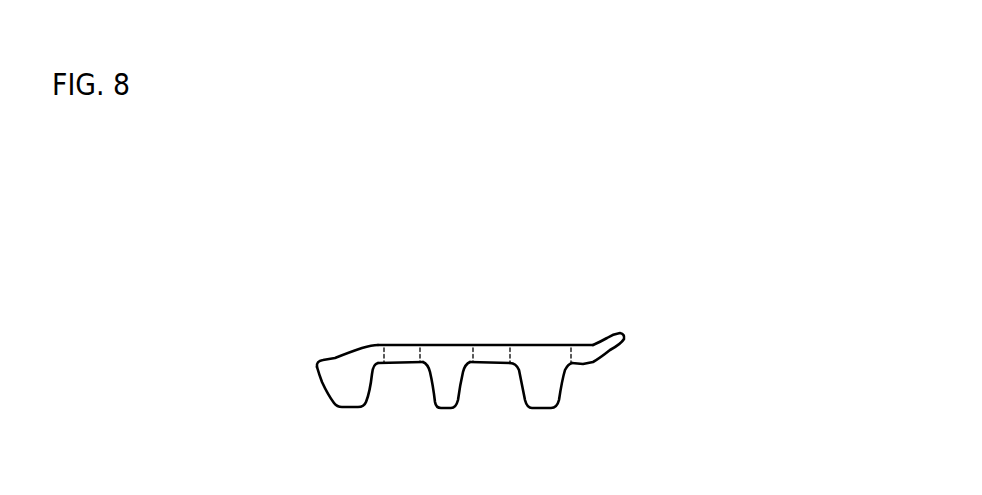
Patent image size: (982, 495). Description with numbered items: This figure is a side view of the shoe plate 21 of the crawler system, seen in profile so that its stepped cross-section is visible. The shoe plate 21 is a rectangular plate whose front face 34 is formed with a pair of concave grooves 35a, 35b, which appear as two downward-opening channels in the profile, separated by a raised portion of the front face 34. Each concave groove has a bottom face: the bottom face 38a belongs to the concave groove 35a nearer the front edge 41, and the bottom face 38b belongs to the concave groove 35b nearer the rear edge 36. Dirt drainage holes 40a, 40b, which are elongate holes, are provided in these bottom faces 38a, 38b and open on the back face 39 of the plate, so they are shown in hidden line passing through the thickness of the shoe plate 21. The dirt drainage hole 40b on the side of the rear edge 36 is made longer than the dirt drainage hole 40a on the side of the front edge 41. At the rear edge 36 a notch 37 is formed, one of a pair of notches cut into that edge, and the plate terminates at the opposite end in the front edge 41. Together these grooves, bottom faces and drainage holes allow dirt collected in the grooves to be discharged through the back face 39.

The shoe plate 21 is at (547, 330).
The front face 34 is at (447, 409).
The concave groove 35a is at (433, 388).
The concave groove 35b is at (521, 390).
The rear edge 36 is at (626, 337).
The notch 37 is at (587, 368).
The bottom face 38a is at (393, 364).
The bottom face 38b is at (499, 364).
The back face 39 is at (443, 345).
The dirt drainage hole 40a is at (395, 345).
The dirt drainage hole 40b is at (503, 345).
The front edge 41 is at (316, 367).